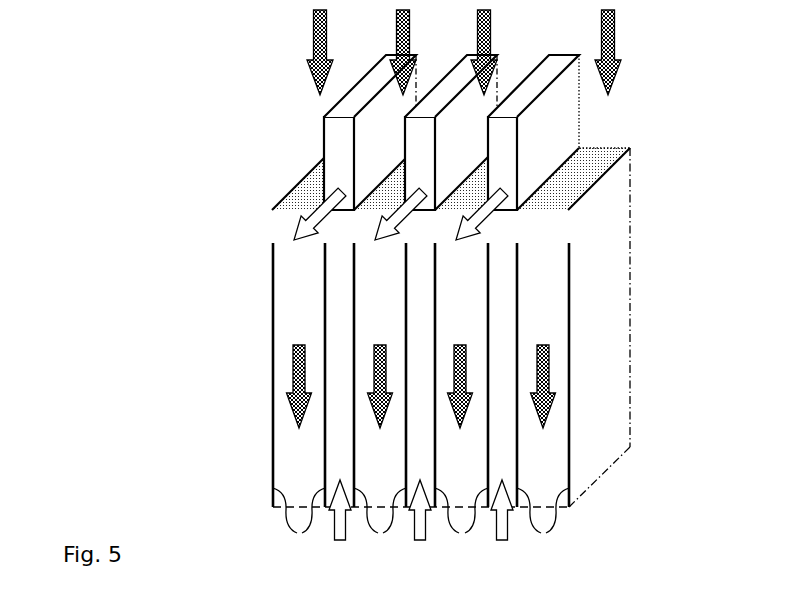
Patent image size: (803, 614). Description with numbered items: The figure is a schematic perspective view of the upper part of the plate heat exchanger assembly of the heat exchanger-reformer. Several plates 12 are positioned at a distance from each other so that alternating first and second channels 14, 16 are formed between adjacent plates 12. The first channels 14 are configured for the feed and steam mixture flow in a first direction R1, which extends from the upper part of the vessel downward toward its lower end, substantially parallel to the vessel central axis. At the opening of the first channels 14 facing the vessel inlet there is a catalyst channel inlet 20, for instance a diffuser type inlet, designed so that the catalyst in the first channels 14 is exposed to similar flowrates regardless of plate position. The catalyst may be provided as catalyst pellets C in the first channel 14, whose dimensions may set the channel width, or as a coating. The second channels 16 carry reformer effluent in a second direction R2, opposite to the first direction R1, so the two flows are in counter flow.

The plates 12 is at (421, 524).
The first channels 14 is at (284, 291).
The second channels 16 is at (325, 318).
The catalyst channel inlet 20 is at (588, 163).
The catalyst pellets C is at (557, 196).
The first direction R1 is at (293, 370).
The second direction R2 is at (501, 541).